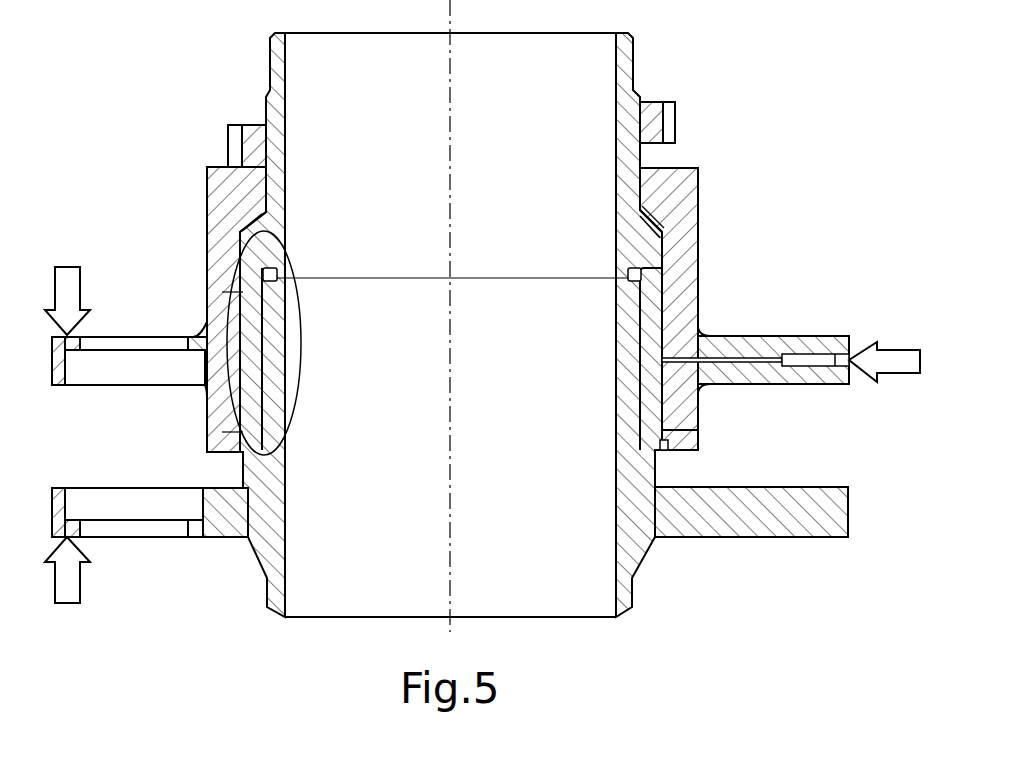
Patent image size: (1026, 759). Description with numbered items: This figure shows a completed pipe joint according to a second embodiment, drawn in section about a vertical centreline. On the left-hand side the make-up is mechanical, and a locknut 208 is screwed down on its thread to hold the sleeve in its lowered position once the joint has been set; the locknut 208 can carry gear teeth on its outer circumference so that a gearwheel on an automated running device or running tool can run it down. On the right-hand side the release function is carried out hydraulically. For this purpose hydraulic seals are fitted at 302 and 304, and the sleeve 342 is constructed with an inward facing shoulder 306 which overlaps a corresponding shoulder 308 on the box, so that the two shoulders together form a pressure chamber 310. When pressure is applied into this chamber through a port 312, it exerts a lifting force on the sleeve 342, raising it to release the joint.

The locknut 208 is at (656, 118).
The hydraulic seal 302 is at (667, 440).
The hydraulic seal 304 is at (642, 200).
The inward facing shoulder 306 is at (640, 212).
The shoulder 308 is at (641, 236).
The pressure chamber 310 is at (646, 214).
The port 312 is at (851, 357).
The sleeve 342 is at (682, 270).